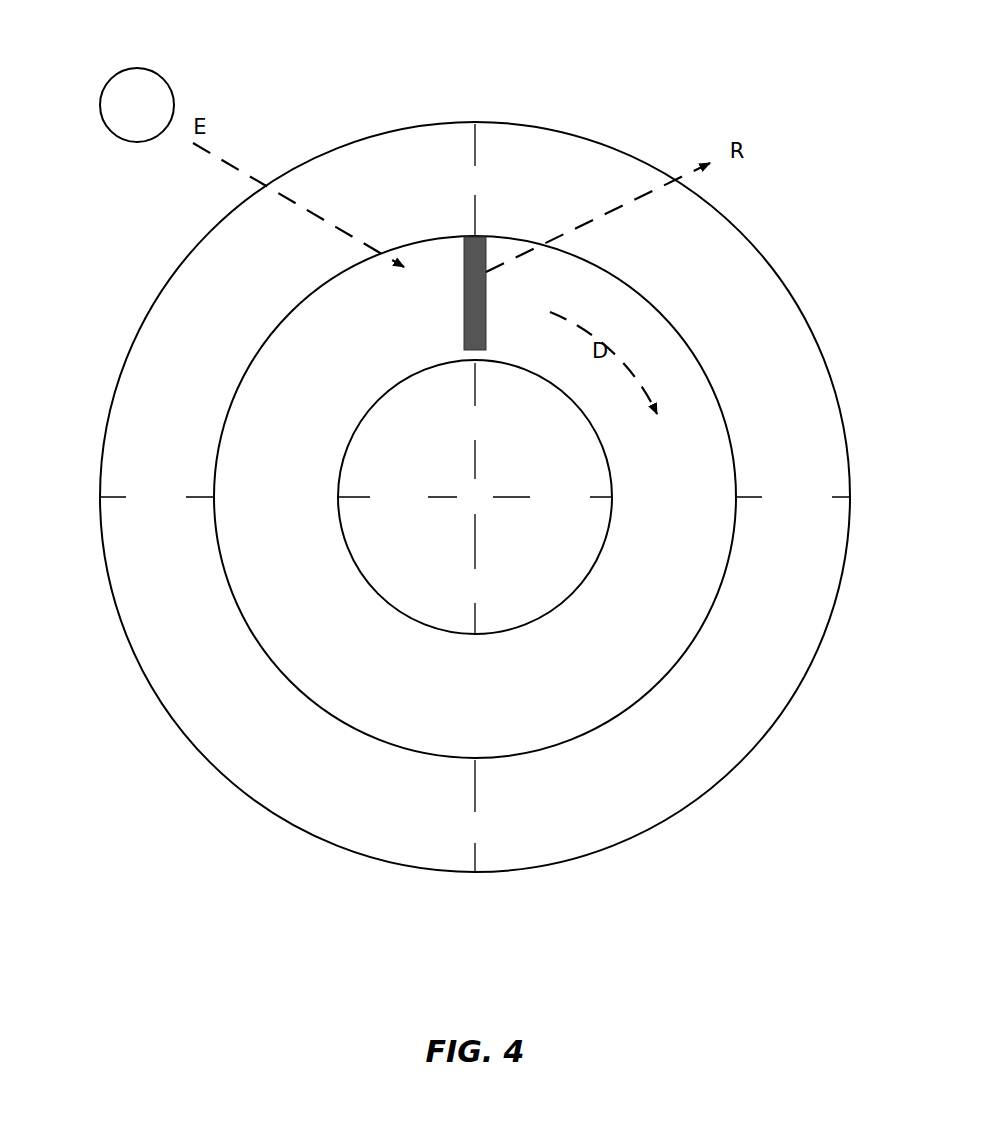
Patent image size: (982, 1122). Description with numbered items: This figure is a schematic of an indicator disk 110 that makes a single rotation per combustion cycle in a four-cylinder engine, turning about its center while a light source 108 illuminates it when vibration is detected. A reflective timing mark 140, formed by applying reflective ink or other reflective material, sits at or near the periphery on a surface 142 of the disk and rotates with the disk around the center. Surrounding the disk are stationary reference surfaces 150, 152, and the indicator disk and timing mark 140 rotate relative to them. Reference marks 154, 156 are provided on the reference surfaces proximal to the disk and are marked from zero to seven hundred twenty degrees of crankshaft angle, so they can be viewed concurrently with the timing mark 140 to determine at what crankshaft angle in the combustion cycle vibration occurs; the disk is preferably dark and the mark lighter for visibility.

The light source 108 is at (130, 84).
The indicator disk 110 is at (262, 438).
The reflective timing mark 140 is at (488, 247).
The surface of the disk 142 is at (337, 357).
The reference surface 150 is at (265, 762).
The reference surface 152 is at (537, 573).
The reference mark 154 is at (475, 850).
The reference mark 156 is at (482, 630).